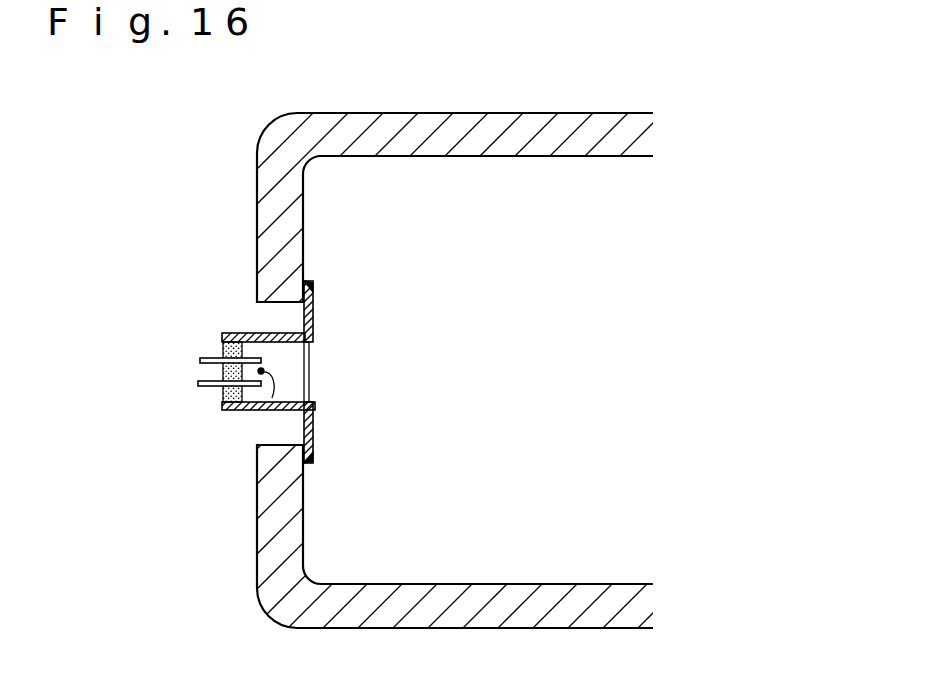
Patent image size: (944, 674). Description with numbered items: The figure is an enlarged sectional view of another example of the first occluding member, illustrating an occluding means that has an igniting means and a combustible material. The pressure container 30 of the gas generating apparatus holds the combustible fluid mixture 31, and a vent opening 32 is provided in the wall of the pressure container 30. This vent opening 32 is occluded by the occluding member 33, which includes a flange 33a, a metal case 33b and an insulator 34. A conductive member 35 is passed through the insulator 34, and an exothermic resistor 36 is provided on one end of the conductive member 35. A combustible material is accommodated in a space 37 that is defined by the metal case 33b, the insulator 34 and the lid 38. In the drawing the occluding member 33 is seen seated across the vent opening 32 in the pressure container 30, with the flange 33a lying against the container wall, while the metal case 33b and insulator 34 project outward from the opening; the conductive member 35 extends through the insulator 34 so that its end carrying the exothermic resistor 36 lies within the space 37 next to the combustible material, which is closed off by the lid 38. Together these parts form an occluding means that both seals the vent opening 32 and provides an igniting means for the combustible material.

The pressure container 30 is at (560, 121).
The combustible fluid mixture 31 is at (492, 230).
The vent opening 32 is at (272, 428).
The occluding member 33 is at (311, 415).
The flange 33a is at (314, 443).
The metal case 33b is at (230, 411).
The insulator 34 is at (223, 395).
The conductive member 35 is at (205, 358).
The exothermic resistor 36 is at (241, 418).
The space 37 is at (268, 350).
The lid 38 is at (310, 368).